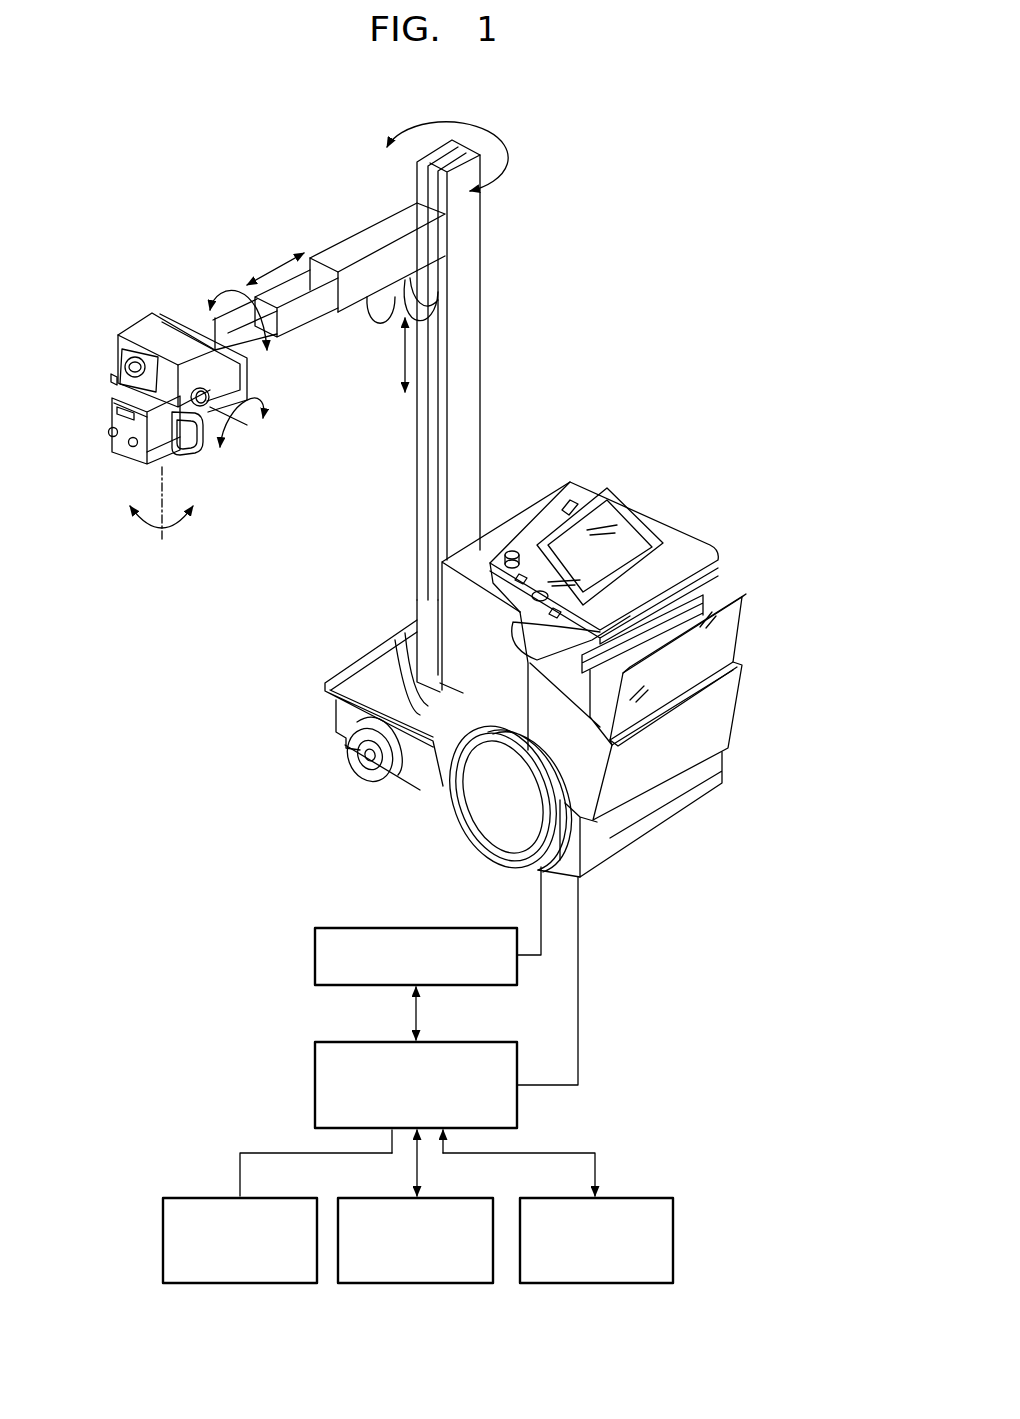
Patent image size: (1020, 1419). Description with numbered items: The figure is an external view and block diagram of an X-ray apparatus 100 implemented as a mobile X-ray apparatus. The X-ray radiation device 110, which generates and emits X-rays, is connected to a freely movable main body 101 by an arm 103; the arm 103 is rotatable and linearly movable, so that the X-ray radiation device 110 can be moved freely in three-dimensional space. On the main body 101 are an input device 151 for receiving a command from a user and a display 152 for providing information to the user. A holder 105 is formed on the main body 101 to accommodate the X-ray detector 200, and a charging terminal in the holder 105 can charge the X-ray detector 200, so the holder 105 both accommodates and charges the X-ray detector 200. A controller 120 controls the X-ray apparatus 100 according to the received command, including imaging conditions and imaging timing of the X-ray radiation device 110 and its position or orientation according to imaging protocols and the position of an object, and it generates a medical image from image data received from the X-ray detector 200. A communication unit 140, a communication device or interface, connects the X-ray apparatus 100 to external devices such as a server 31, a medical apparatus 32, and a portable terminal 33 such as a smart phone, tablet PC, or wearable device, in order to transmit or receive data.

The X-ray apparatus 100 is at (689, 177).
The main body 101 is at (443, 631).
The arm 103 is at (494, 316).
The holder 105 is at (728, 709).
The X-ray radiation device 110 is at (130, 311).
The controller 120 is at (452, 928).
The communication unit 140 is at (455, 1042).
The input device 151 is at (525, 572).
The display 152 is at (617, 525).
The X-ray detector 200 is at (731, 636).
The server 31 is at (258, 1198).
The medical apparatus 32 is at (440, 1198).
The portable terminal 33 is at (623, 1198).